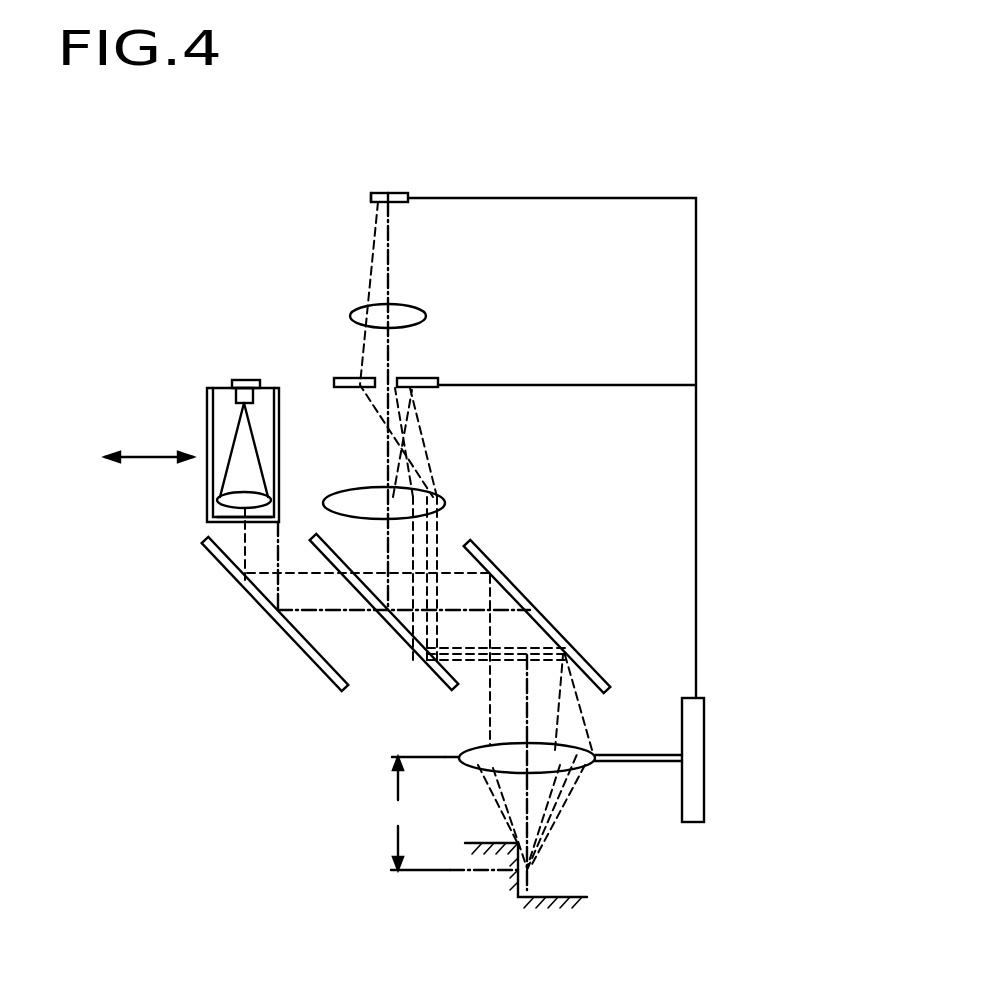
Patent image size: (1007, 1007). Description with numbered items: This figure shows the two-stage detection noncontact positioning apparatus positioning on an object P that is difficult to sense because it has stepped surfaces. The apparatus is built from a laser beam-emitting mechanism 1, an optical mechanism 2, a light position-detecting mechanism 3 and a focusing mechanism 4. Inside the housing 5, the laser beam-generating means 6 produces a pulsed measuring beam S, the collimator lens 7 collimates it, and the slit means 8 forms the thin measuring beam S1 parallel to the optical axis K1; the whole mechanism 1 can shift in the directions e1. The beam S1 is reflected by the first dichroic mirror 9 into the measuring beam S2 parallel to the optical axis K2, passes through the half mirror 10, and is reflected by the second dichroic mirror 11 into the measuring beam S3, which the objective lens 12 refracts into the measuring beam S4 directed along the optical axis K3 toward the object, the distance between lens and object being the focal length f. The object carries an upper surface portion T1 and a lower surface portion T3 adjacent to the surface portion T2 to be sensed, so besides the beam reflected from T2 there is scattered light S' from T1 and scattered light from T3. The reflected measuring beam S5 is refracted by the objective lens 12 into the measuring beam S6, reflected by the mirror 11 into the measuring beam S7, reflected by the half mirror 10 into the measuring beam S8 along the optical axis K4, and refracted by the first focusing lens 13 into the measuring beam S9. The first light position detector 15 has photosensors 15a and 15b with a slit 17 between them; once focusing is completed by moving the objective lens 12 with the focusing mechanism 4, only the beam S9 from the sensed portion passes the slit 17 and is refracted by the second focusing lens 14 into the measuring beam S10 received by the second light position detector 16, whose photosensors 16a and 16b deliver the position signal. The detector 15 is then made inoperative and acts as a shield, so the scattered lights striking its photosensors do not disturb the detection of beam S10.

The laser beam-emitting mechanism 1 is at (200, 362).
The optical mechanism 2 is at (325, 712).
The light position-detecting mechanism 3 is at (473, 325).
The focusing mechanism 4 is at (708, 740).
The housing 5 is at (280, 404).
The laser beam-generating means 6 is at (244, 380).
The collimator lens 7 is at (218, 505).
The slit means 8 is at (240, 520).
The first dichroic mirror 9 is at (255, 622).
The half mirror 10 is at (384, 636).
The second dichroic mirror 11 is at (572, 625).
The objective lens 12 is at (590, 770).
The first focusing lens 13 is at (446, 503).
The second focusing lens 14 is at (426, 316).
The first light position detector 15 is at (448, 392).
The photosensor 15a is at (440, 380).
The photosensor 15b is at (358, 376).
The second light position detector 16 is at (420, 198).
The photosensor 16a is at (400, 192).
The photosensor 16b is at (380, 192).
The slit 17 is at (378, 390).
The measuring beam S is at (205, 441).
The measuring beam S1 is at (236, 574).
The measuring beam S2 is at (320, 577).
The measuring beam S3 is at (485, 728).
The measuring beam S4 is at (498, 805).
The measuring beam (scattered light) S' is at (495, 816).
The measuring beam S5 is at (552, 835).
The measuring beam S6 is at (580, 705).
The measuring beam S7 is at (475, 668).
The measuring beam S8 is at (430, 530).
The measuring beam S9 is at (405, 432).
The measuring beam S10 is at (376, 256).
The optical axis K1 is at (284, 520).
The optical axis K2 is at (363, 612).
The optical axis K3 is at (560, 722).
The optical axis K4 is at (437, 462).
The upper surface portion T1 is at (478, 858).
The surface portion to be sensed T2 is at (532, 875).
The lower surface portion T3 is at (568, 900).
The focal point P is at (512, 895).
The arrow (direction of movement) e1 is at (128, 458).
The focal length (distance) f is at (454, 813).